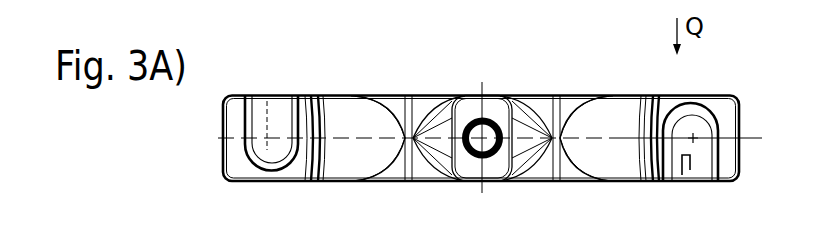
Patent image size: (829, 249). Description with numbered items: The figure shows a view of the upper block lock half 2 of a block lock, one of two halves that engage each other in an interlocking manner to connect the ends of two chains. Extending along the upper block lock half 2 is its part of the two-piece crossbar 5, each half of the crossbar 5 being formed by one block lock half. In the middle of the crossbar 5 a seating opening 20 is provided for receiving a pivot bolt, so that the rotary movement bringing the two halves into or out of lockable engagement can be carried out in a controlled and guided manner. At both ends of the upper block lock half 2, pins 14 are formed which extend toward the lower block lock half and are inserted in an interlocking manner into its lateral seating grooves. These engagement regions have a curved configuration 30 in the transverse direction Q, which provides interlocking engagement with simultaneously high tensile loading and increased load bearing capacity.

The upper block lock half 2 is at (244, 67).
The crossbar 5 is at (493, 172).
The pins 14 is at (282, 118).
The seating opening 20 is at (491, 131).
The curved configuration 30 is at (268, 130).